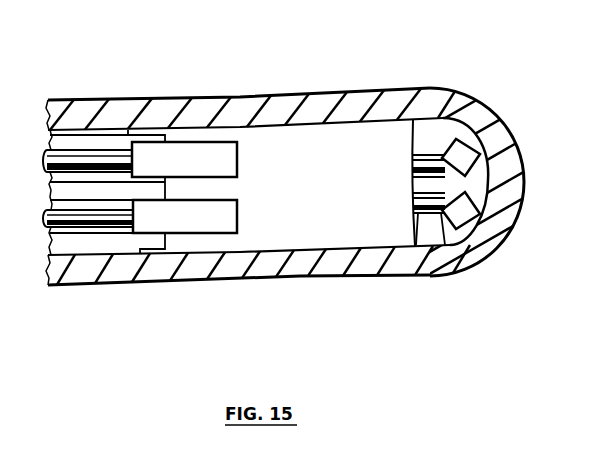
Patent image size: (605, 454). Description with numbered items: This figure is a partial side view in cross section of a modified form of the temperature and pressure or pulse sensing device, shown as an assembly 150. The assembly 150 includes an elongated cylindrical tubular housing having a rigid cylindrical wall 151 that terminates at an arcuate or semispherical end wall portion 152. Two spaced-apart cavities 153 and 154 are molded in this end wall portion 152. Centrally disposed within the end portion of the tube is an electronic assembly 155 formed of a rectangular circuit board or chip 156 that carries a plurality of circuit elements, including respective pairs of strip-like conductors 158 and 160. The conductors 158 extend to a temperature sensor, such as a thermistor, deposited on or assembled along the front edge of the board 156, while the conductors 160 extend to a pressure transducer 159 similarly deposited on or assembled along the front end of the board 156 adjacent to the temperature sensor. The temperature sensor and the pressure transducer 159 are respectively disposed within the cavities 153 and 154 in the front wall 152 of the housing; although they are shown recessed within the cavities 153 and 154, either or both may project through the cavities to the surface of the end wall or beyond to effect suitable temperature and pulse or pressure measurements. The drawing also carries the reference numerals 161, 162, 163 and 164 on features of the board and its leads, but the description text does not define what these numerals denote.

The assembly 150 is at (172, 90).
The rigid cylindrical wall 151 is at (133, 105).
The end wall portion 152 is at (515, 165).
The cavity 153 is at (479, 115).
The cavity 154 is at (493, 237).
The electronic assembly 155 is at (338, 237).
The circuit board 156 is at (348, 184).
The strip-like conductors 158 is at (427, 155).
The pressure transducer 159 is at (498, 247).
The strip-like conductors 160 is at (445, 247).
The upper connector block 161 is at (210, 167).
The upper conductor wire 162 is at (73, 174).
The lower connector block 163 is at (212, 227).
The lower conductor wire 164 is at (100, 235).